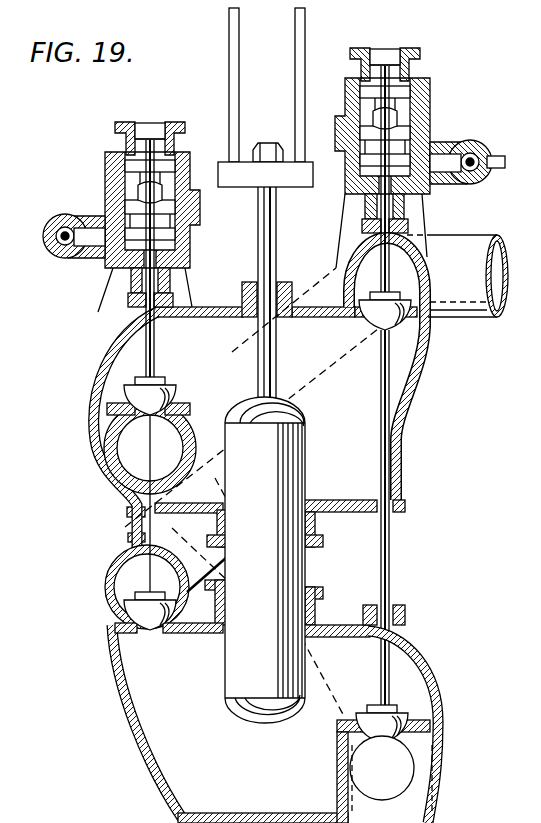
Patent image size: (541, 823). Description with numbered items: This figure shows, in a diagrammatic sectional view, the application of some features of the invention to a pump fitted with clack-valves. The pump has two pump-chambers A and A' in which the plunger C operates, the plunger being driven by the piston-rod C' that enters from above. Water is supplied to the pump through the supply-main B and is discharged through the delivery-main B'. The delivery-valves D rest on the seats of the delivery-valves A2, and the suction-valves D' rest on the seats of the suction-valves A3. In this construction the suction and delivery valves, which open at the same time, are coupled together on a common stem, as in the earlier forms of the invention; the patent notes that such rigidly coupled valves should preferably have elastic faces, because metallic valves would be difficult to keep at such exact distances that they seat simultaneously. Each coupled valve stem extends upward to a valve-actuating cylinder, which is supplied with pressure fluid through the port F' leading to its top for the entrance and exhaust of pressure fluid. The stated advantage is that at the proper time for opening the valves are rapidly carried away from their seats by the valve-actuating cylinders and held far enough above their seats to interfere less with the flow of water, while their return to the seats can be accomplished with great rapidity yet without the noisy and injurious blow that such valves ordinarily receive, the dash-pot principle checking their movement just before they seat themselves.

The port F' is at (274, 180).
The piston-rod C' is at (277, 293).
The plunger C is at (265, 560).
The delivery-main B' is at (457, 276).
The pump-chamber A' is at (276, 380).
The pump-chamber A is at (258, 714).
The seat of the delivery-valve A2 is at (163, 630).
The seat of the suction-valve A3 is at (175, 398).
The delivery-valve D is at (150, 385).
The suction-valve D' is at (383, 404).
The supply-main B is at (387, 727).